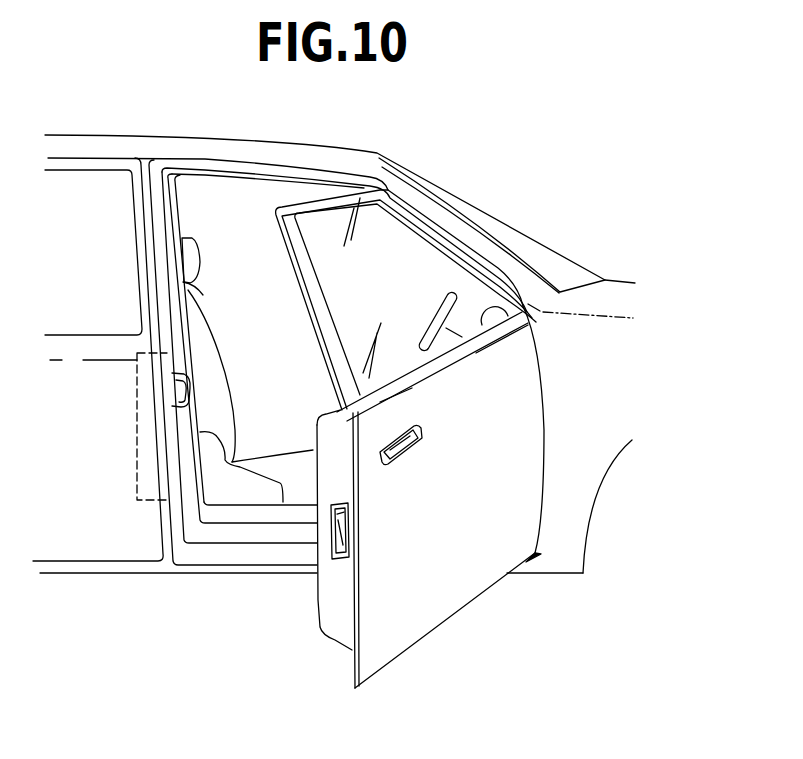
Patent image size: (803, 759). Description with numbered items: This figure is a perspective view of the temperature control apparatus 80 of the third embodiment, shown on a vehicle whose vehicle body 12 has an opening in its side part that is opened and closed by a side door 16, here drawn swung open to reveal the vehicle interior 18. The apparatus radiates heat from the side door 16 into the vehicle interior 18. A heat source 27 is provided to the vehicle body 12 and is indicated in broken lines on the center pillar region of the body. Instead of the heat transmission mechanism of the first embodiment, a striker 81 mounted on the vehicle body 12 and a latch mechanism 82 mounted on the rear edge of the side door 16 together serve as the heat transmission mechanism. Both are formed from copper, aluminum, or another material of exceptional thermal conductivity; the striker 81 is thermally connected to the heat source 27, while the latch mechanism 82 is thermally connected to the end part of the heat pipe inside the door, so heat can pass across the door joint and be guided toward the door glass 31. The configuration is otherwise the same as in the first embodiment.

The vehicle body 12 is at (155, 306).
The side door 16 is at (442, 415).
The vehicle interior 18 is at (247, 252).
The heat source 27 is at (147, 410).
The door glass 31 is at (398, 237).
The temperature control apparatus 80 is at (537, 187).
The striker 81 is at (190, 380).
The latch mechanism 82 is at (332, 517).